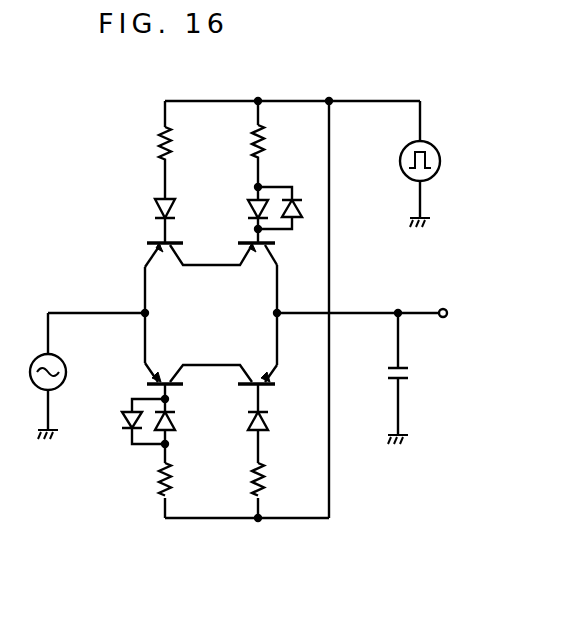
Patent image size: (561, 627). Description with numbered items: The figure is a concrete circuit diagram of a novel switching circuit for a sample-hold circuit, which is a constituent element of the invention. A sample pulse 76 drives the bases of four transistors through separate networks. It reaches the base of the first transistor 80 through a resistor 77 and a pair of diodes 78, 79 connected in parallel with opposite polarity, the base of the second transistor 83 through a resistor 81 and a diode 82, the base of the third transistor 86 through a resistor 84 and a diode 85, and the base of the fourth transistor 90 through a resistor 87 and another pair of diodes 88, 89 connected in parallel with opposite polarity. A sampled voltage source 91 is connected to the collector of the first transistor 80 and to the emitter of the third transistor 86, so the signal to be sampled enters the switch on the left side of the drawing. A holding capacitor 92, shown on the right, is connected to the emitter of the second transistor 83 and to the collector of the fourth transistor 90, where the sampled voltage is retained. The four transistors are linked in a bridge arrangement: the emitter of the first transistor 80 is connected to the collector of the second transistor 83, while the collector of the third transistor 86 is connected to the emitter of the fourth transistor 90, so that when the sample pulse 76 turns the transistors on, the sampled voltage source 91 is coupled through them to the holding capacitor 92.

The sample pulse 76 is at (442, 162).
The resistor 77 is at (173, 481).
The diode 78 is at (177, 421).
The diode 79 is at (119, 424).
The first transistor 80 is at (168, 364).
The resistor 81 is at (266, 481).
The diode 82 is at (269, 421).
The second transistor 83 is at (260, 364).
The resistor 84 is at (172, 141).
The diode 85 is at (154, 209).
The third transistor 86 is at (168, 270).
The resistor 87 is at (266, 141).
The diode 88 is at (249, 209).
The diode 89 is at (312, 185).
The fourth transistor 90 is at (258, 270).
The sampled voltage source 91 is at (71, 352).
The holding capacitor 92 is at (410, 373).